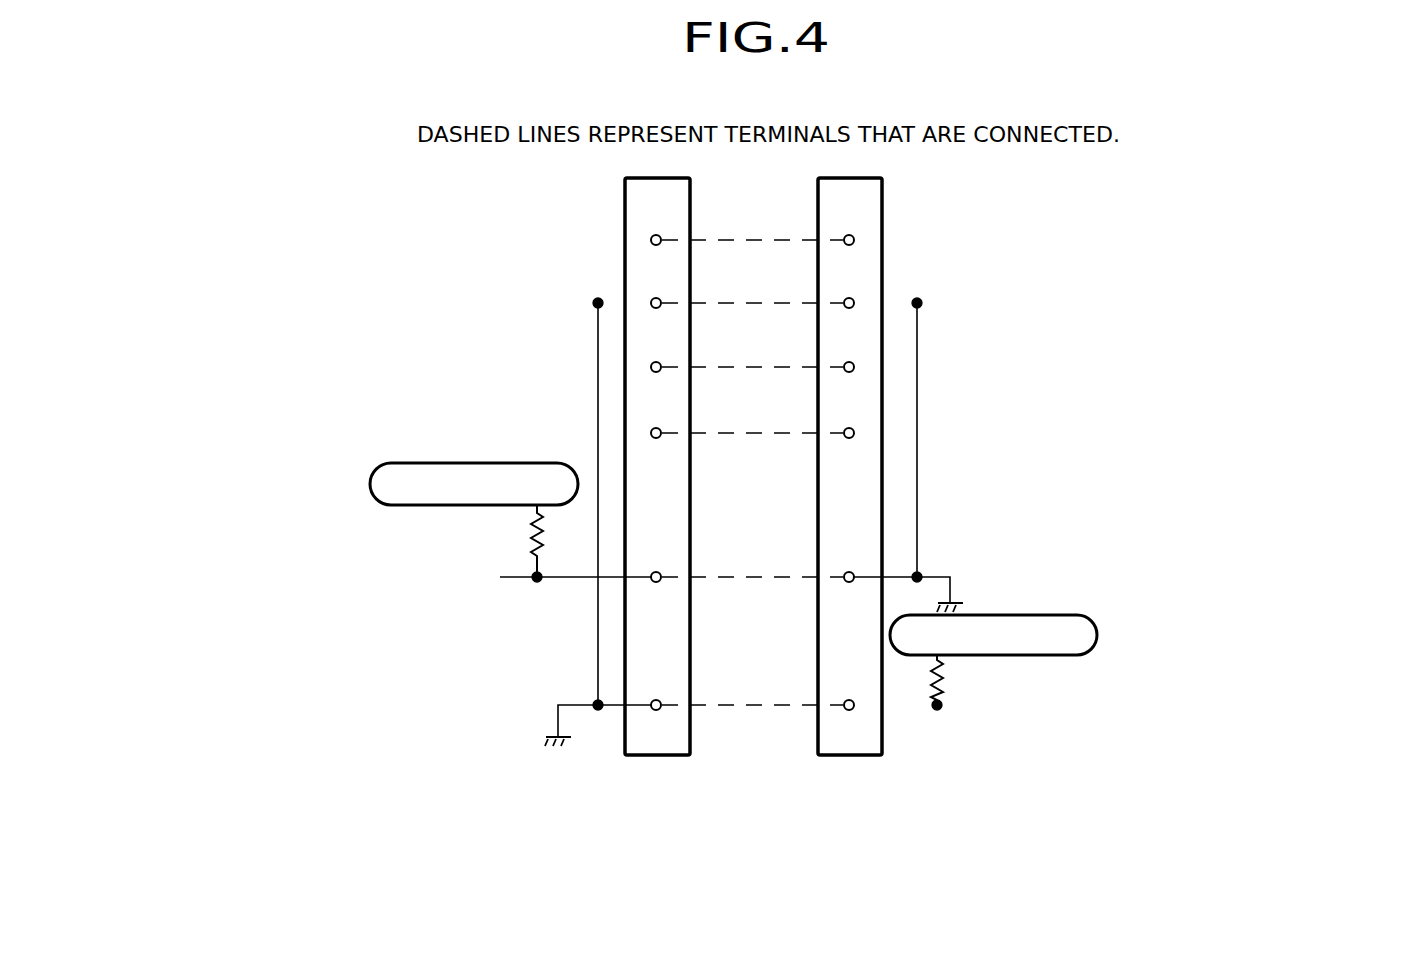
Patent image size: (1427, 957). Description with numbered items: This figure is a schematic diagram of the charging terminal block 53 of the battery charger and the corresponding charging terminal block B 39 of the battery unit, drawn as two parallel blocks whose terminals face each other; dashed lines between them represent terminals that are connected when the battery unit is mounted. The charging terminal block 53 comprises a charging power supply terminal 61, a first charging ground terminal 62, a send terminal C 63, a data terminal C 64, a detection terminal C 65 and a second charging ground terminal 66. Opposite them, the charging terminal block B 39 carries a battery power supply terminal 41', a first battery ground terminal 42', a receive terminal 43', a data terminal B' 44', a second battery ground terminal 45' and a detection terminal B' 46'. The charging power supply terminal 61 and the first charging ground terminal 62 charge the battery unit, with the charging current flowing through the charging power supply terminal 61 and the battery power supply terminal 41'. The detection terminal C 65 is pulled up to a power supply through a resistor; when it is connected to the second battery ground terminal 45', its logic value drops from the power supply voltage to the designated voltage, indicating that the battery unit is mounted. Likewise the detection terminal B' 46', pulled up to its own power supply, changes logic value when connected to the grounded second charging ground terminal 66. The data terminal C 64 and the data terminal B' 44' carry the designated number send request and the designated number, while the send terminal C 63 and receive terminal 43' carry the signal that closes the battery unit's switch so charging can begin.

The charging power supply terminal 61 is at (651, 240).
The charging ground terminal 1 62 is at (651, 303).
The send terminal C 63 is at (651, 367).
The data terminal C 64 is at (651, 433).
The detection terminal C 65 is at (418, 534).
The charging ground terminal 2 66 is at (391, 714).
The charging terminal block 53 is at (662, 757).
The charging terminal block B 39 is at (837, 757).
The battery power supply terminal 41' is at (1130, 238).
The battery ground terminal 1' 42' is at (1103, 303).
The receive terminal 43' is at (1039, 366).
The data terminal B' 44' is at (1037, 429).
The battery ground terminal 2' 45' is at (1118, 592).
The detection terminal B' 46' is at (1084, 667).